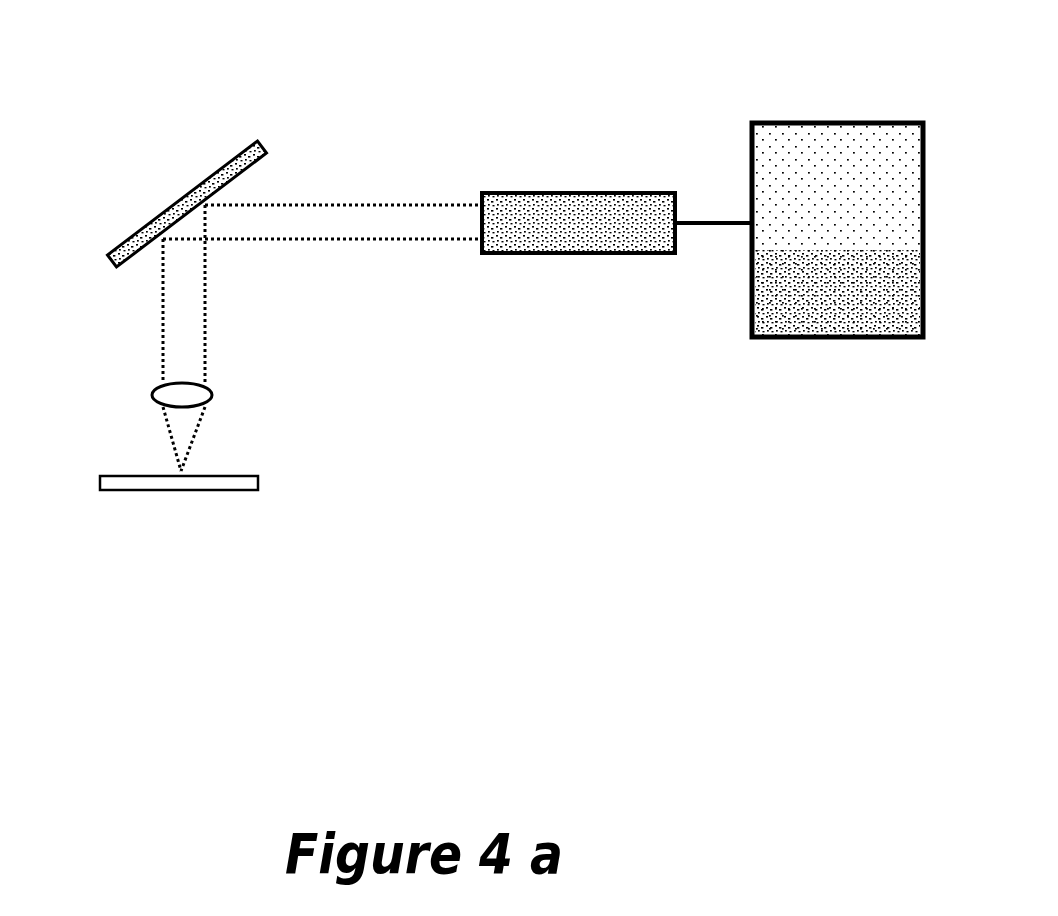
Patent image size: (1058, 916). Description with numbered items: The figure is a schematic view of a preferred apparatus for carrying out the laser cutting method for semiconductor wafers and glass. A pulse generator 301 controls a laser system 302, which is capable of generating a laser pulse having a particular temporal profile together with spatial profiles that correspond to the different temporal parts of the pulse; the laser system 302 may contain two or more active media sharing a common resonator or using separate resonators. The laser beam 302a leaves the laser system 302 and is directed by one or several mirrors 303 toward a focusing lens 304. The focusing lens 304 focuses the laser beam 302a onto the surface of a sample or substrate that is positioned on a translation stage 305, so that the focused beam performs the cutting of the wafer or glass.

The pulse generator 301 is at (823, 337).
The laser system 302 is at (575, 193).
The laser beam 302a is at (318, 352).
The mirror 303 is at (168, 205).
The focusing lens 304 is at (152, 397).
The translation stage 305 is at (258, 486).